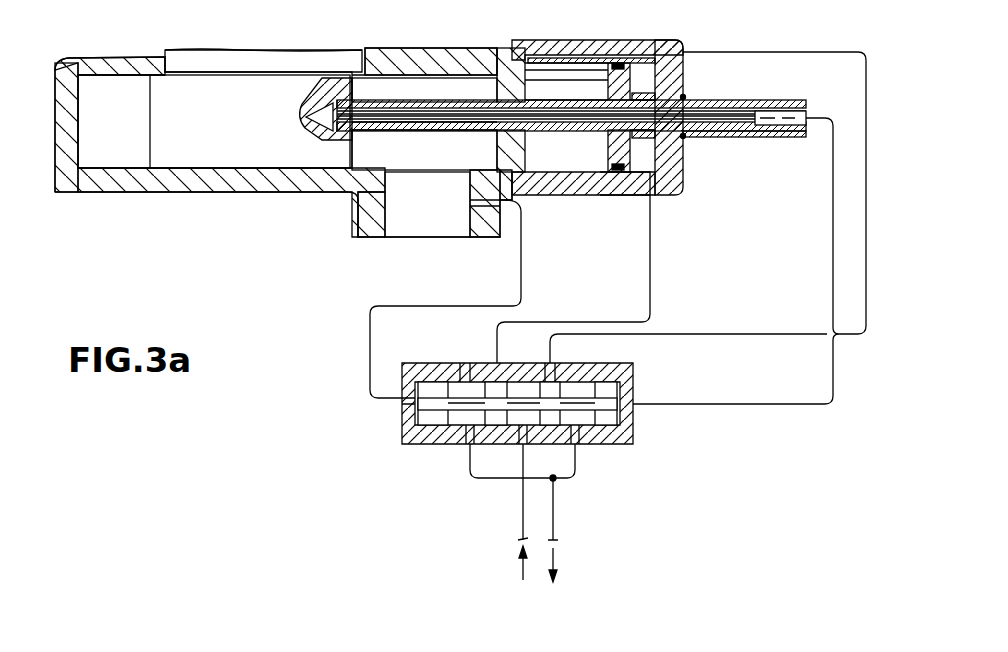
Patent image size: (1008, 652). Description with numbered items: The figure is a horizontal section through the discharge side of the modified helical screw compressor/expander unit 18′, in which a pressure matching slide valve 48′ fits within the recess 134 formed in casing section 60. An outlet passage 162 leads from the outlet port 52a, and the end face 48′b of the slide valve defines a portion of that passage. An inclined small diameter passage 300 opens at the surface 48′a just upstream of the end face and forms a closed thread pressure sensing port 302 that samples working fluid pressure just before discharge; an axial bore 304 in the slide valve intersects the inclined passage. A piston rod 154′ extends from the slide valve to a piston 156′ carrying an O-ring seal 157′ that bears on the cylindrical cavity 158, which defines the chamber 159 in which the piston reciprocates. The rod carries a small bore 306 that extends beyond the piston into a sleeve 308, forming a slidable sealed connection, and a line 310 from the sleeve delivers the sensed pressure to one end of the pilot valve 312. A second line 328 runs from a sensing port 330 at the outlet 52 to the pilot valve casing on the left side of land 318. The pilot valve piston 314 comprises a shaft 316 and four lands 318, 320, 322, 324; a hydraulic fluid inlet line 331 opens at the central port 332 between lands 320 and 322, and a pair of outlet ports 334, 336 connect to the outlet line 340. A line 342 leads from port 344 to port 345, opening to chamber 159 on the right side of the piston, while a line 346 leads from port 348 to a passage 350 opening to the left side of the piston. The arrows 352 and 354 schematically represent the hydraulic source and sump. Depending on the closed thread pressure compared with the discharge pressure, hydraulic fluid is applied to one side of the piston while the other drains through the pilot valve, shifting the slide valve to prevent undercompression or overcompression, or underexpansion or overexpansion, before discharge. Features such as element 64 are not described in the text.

The compressor/expander unit 18′ is at (150, 203).
The pressure matching slide valve 48′ is at (236, 50).
The slide valve surface 48′a is at (265, 72).
The slide valve end face 48′b is at (355, 160).
The closed thread pressure sensing port 302 is at (348, 75).
The inclined passage 300 is at (308, 98).
The axial bore 304 is at (318, 128).
The outlet port 52a is at (358, 80).
The piston rod 154′ is at (437, 93).
The outlet passage 162 is at (438, 164).
The shaft bore 306 is at (468, 122).
The sensing port 330 is at (470, 203).
The recess 134 is at (213, 168).
The casing section 60 is at (265, 190).
The outlet 52 is at (398, 222).
The passage 350 is at (588, 52).
The O-ring seal 157′ is at (618, 62).
The piston 156′ is at (645, 70).
The sleeve 308 is at (728, 100).
The cylindrical cavity 158 is at (558, 172).
The cylinder 64 is at (626, 195).
The chamber 159 is at (660, 160).
The port 345 is at (655, 195).
The line 310 is at (833, 188).
The line 346 is at (867, 178).
The second line 328 is at (521, 280).
The line 342 is at (652, 275).
The pilot valve 312 is at (641, 371).
The pilot valve piston 314 is at (462, 380).
The shaft 316 is at (460, 410).
The land 318 is at (430, 408).
The land 320 is at (470, 450).
The land 322 is at (547, 392).
The land 324 is at (608, 392).
The central port 332 is at (526, 452).
The outlet port 334 is at (470, 444).
The outlet port 336 is at (578, 450).
The port 344 is at (465, 395).
The port 348 is at (553, 378).
The hydraulic fluid inlet line 331 is at (521, 512).
The outlet line 340 is at (556, 500).
The arrow 352 is at (521, 560).
The arrow 354 is at (556, 558).